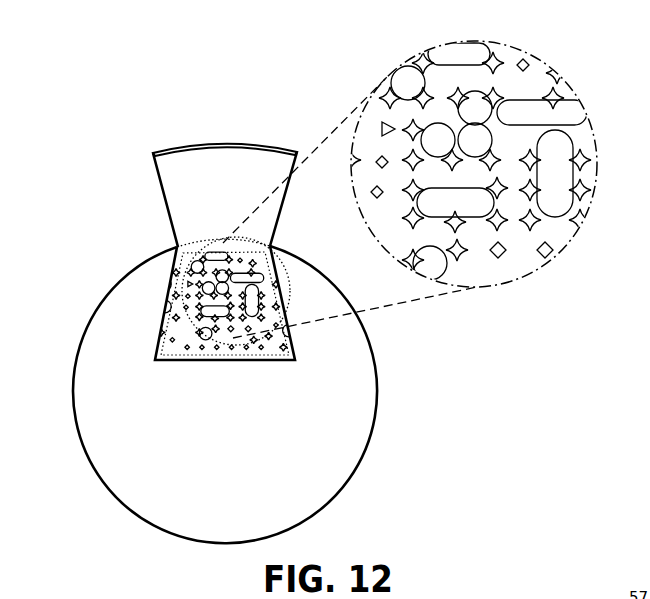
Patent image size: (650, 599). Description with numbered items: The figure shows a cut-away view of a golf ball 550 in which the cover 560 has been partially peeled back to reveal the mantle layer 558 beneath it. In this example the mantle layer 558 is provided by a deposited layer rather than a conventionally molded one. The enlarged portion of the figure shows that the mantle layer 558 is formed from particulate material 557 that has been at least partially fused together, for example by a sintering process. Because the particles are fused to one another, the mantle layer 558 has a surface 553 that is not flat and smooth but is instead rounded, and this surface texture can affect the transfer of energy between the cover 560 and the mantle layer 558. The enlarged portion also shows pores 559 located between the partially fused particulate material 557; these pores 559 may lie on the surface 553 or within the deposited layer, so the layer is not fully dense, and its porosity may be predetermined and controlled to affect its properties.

The golf ball 550 is at (74, 132).
The surface 553 is at (199, 243).
The particulate material 557 is at (540, 82).
The mantle layer 558 is at (279, 279).
The pores 559 is at (558, 100).
The cover 560 is at (179, 149).